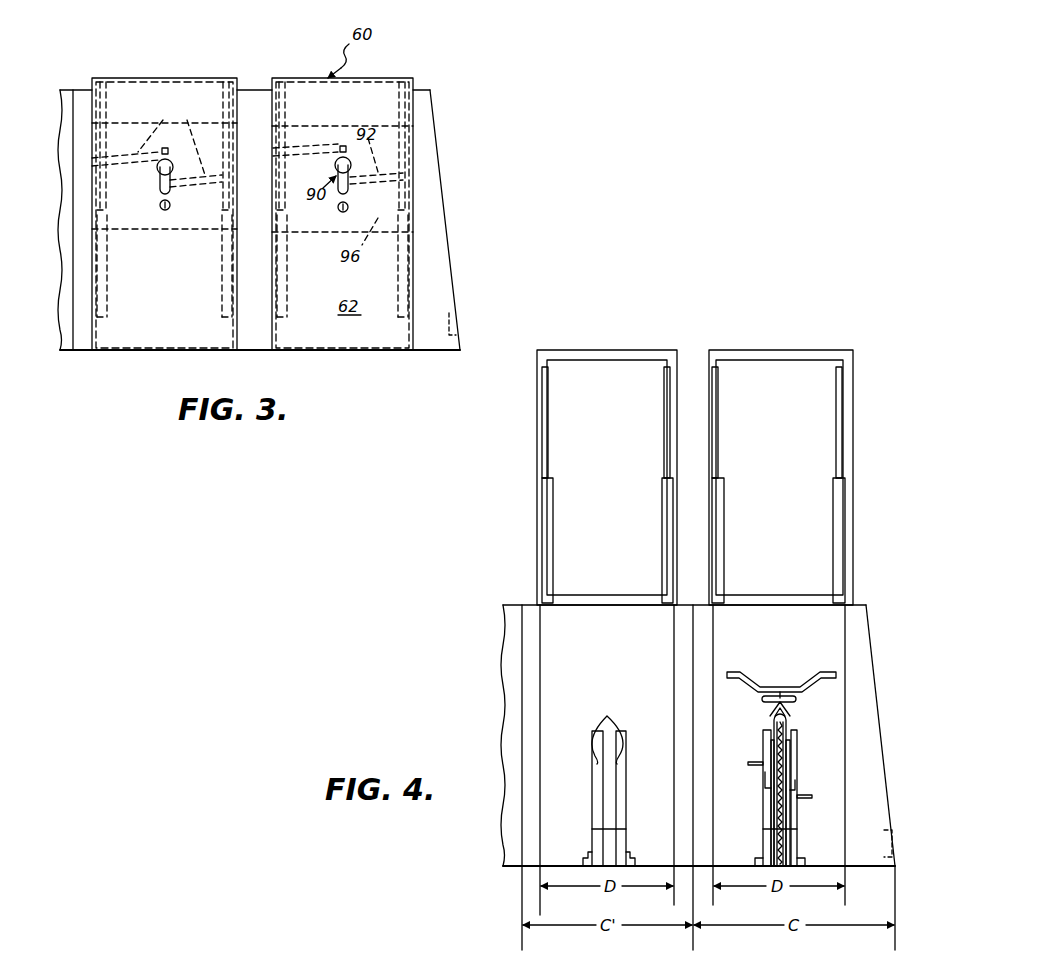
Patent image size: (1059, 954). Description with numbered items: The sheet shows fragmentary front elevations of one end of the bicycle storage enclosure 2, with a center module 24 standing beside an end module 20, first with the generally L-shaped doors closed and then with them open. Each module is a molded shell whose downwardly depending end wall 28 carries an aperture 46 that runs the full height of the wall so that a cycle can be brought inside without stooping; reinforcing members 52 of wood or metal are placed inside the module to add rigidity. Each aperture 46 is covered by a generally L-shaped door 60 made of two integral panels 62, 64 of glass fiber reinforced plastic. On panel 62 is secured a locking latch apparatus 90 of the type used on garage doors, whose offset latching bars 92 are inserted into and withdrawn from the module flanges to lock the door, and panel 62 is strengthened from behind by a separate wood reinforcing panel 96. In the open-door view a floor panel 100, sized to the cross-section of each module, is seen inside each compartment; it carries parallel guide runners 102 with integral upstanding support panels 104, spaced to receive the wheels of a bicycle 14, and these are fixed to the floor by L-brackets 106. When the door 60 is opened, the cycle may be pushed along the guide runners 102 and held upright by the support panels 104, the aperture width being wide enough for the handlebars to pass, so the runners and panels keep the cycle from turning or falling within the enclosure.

In FIG. 4, the bicycle storage apparatus 2 is at (856, 862).
In FIG. 4, the bicycle 14 is at (752, 680).
In FIG. 3, the right-hand end module 20 is at (422, 353).
In FIG. 4, the right-hand end module 20 is at (858, 870).
In FIG. 3, the center module 24 is at (92, 352).
In FIG. 4, the center module 24 is at (524, 869).
In FIG. 3, the end wall 28 is at (82, 105).
In FIG. 4, the aperture 46 is at (545, 667).
In FIG. 3, the reinforcing member 52 is at (455, 312).
In FIG. 4, the reinforcing member 52 is at (878, 824).
In FIG. 3, the door 60 is at (162, 78).
In FIG. 4, the door 60 is at (856, 441).
In FIG. 3, the door panel 62 is at (178, 315).
In FIG. 4, the door panel 62 is at (826, 350).
In FIG. 4, the door panel 64 is at (620, 533).
In FIG. 3, the locking latch apparatus 90 is at (158, 176).
In FIG. 3, the latching bar 92 is at (157, 142).
In FIG. 3, the reinforcing panel 96 is at (195, 212).
In FIG. 4, the floor panel 100 is at (649, 862).
In FIG. 4, the guide runner 102 is at (630, 842).
In FIG. 4, the support panel 104 is at (609, 730).
In FIG. 4, the L-bracket 106 is at (800, 862).